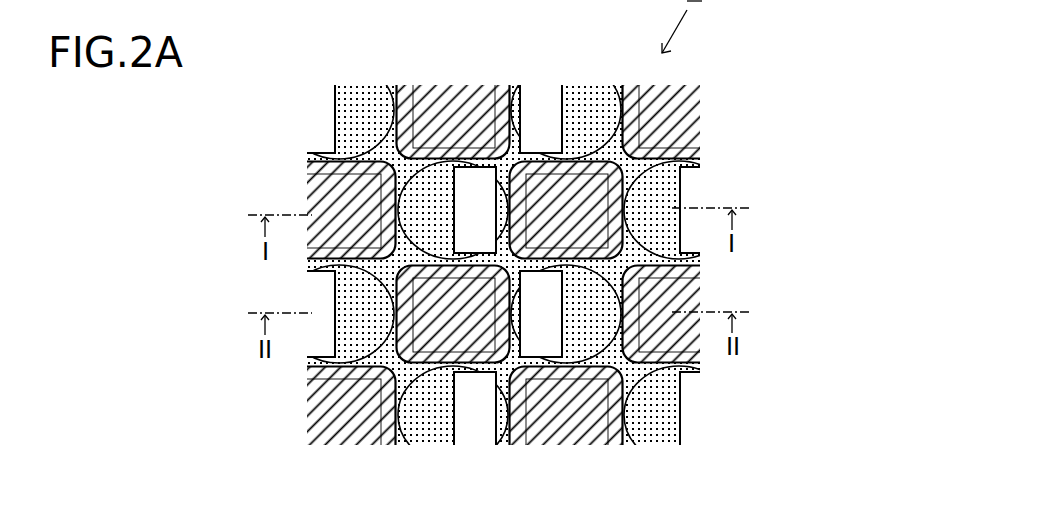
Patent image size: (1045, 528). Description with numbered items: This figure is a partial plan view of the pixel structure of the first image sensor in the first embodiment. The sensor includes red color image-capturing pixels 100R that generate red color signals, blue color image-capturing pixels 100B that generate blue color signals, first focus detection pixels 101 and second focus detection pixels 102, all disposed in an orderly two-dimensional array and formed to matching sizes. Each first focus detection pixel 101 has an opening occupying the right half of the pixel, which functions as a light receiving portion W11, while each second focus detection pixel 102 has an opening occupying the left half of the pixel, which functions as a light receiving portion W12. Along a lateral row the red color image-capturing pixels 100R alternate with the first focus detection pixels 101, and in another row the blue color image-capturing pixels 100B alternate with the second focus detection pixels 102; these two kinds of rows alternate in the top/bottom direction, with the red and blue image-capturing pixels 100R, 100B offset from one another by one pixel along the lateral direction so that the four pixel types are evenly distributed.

The red color image-capturing pixel 100R is at (572, 187).
The blue color image-capturing pixel 100B is at (478, 90).
The first focus detection pixel 101 is at (440, 170).
The second focus detection pixel 102 is at (345, 343).
The light receiving portion W11 is at (387, 118).
The light receiving portion W12 is at (563, 337).